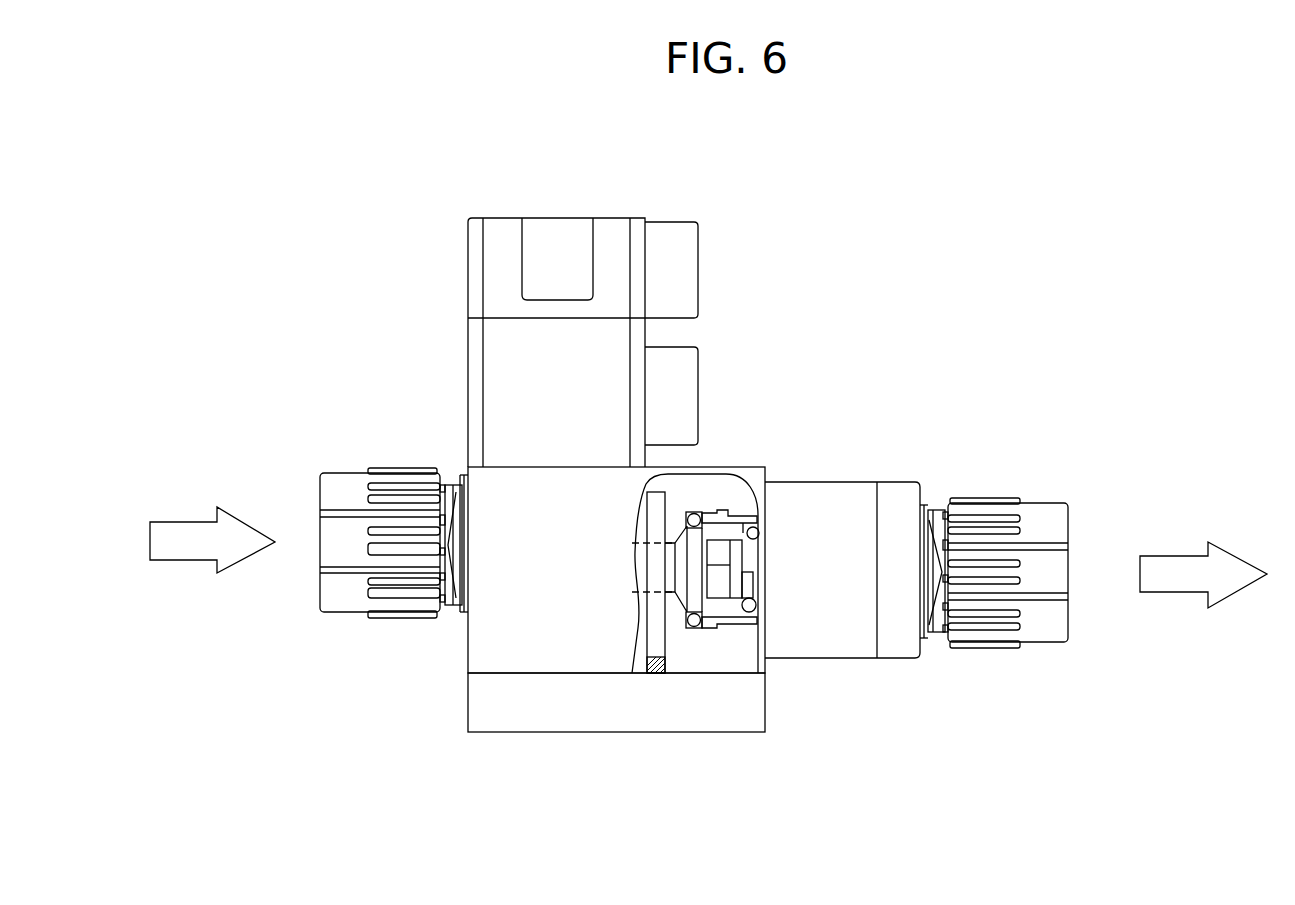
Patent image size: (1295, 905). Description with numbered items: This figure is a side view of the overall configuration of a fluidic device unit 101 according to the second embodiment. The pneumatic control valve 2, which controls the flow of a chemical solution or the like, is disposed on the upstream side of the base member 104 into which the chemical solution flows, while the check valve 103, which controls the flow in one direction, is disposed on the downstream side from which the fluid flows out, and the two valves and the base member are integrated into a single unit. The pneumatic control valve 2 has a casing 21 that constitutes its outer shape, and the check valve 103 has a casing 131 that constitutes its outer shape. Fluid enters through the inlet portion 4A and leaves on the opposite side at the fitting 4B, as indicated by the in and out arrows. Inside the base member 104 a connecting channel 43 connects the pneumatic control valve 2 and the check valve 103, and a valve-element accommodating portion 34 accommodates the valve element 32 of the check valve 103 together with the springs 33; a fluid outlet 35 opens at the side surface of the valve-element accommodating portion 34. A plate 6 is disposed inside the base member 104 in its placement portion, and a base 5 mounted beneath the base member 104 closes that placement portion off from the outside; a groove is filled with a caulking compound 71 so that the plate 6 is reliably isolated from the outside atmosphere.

The fluidic device unit 101 is at (250, 212).
The pneumatic control valve 2 is at (562, 202).
The casing 21 is at (468, 265).
The check valve 103 is at (860, 460).
The casing 131 is at (832, 660).
The base member 104 is at (454, 650).
The base 5 is at (515, 757).
The inlet portion 4A is at (340, 472).
The outlet fitting 4B is at (1043, 505).
The plate 6 is at (650, 510).
The connecting channel 43 is at (637, 558).
The caulking compound 71 is at (655, 675).
The fluid outlet 35 is at (726, 513).
The springs 33 is at (748, 615).
The valve element 32 is at (742, 532).
The valve-element accommodating portion 34 is at (748, 581).